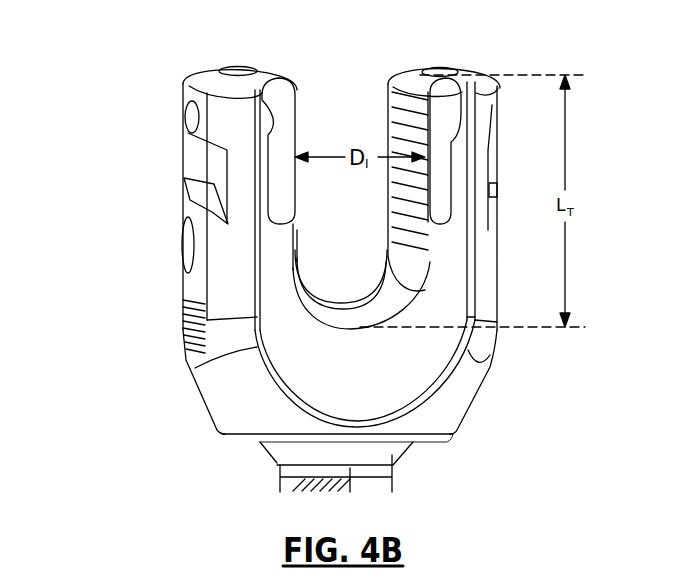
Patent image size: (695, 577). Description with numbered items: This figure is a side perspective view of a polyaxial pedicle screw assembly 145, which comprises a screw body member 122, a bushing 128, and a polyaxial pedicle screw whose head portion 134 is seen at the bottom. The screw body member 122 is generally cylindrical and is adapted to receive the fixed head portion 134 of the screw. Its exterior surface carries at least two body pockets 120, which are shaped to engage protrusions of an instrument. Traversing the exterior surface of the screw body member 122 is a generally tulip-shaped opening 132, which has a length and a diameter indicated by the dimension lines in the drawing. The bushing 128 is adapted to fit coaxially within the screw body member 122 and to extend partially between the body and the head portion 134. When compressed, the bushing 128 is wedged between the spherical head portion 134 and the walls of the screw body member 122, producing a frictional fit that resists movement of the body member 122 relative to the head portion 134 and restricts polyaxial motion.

The polyaxial pedicle screw assembly 145 is at (133, 39).
The body pocket 120 is at (197, 160).
The screw body member 122 is at (193, 288).
The tulip-shaped opening 132 is at (346, 76).
The bushing 128 is at (383, 277).
The head portion 134 is at (390, 453).